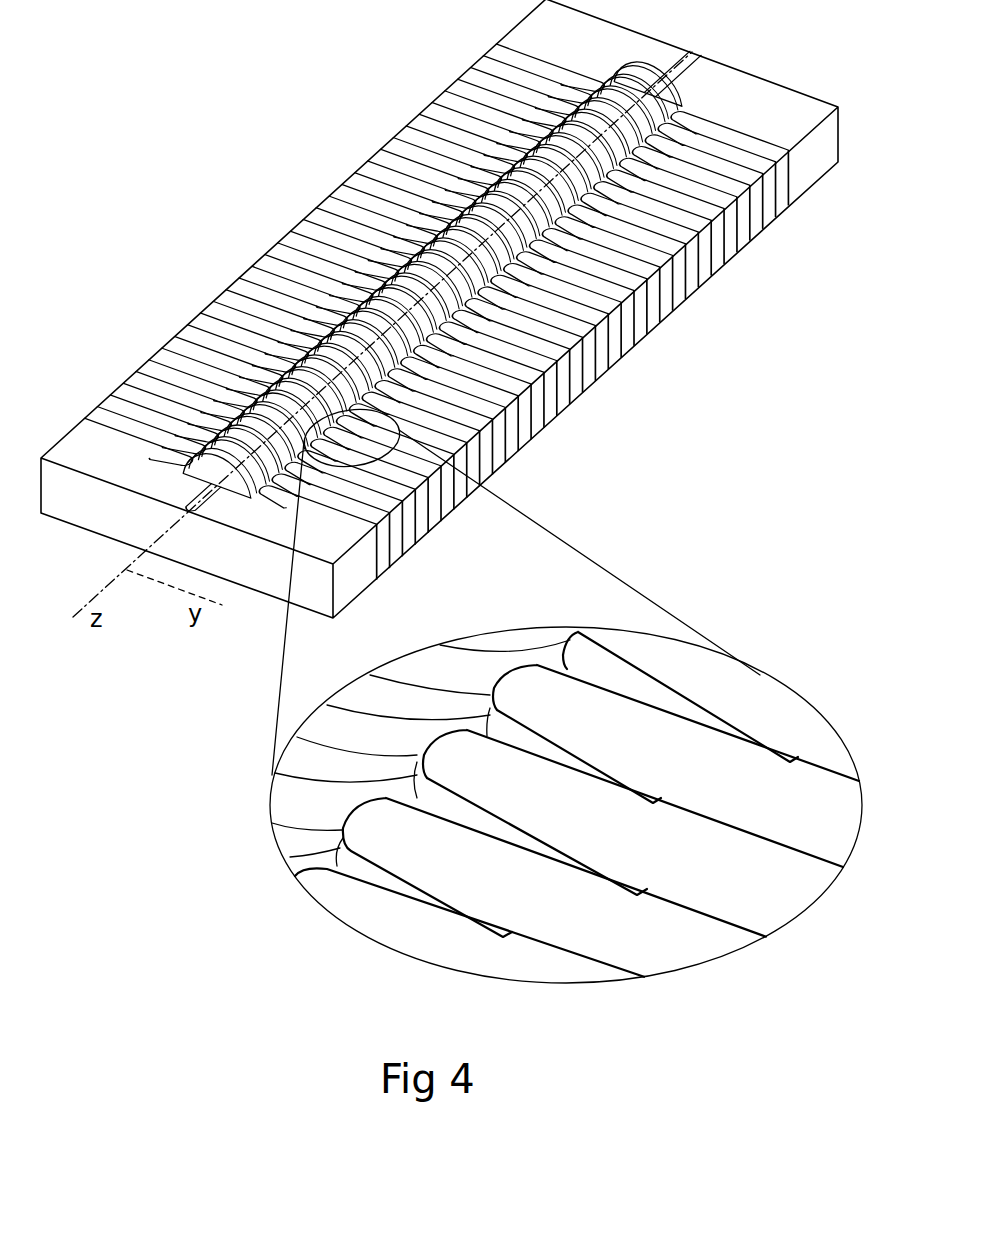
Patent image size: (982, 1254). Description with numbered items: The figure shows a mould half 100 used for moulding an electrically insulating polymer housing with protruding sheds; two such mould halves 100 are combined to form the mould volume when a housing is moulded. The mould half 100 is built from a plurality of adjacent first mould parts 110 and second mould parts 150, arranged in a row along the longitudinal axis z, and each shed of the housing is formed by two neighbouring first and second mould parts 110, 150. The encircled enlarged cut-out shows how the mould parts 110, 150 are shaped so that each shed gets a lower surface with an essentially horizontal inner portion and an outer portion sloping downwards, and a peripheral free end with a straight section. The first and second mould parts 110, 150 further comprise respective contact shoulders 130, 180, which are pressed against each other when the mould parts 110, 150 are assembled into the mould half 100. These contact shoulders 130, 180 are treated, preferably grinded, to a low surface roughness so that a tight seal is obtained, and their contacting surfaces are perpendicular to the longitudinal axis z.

The mould half 100 is at (203, 31).
The first mould part 110 is at (148, 365).
The contact shoulder 130 is at (708, 922).
The second mould part 150 is at (114, 376).
The contact shoulder 180 is at (712, 918).